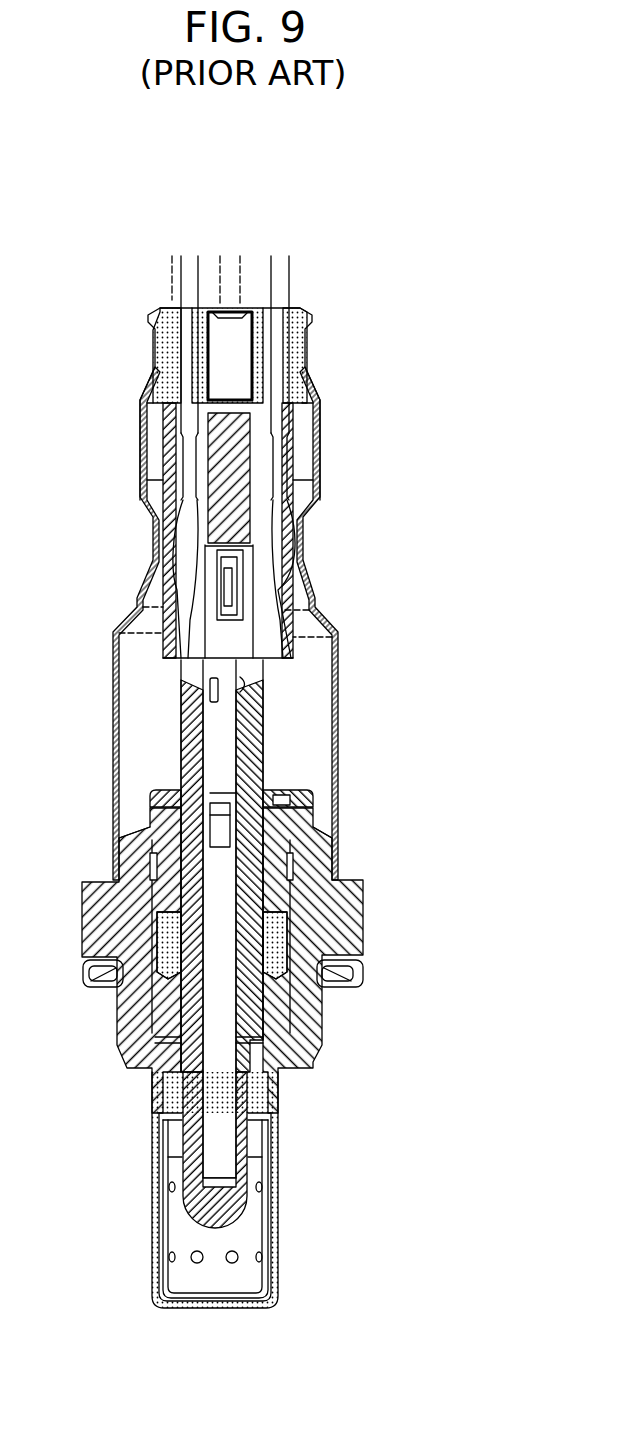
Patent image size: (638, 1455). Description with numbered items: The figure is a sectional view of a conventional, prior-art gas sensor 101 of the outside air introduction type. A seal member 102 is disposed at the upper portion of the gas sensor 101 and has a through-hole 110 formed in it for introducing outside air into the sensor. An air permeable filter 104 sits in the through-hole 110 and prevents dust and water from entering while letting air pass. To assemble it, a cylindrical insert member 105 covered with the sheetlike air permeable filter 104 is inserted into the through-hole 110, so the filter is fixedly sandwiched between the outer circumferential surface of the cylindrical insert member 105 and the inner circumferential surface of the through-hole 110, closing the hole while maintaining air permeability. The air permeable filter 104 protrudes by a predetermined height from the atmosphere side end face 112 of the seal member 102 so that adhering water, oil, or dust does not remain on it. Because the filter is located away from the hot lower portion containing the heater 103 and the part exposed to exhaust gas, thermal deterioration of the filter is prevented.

The gas sensor 101 is at (469, 219).
The seal member 102 is at (303, 313).
The heater 103 is at (225, 1135).
The air permeable filter 104 is at (195, 307).
The cylindrical insert member 105 is at (188, 388).
The through-hole 110 is at (197, 262).
The atmosphere side end face 112 is at (167, 309).